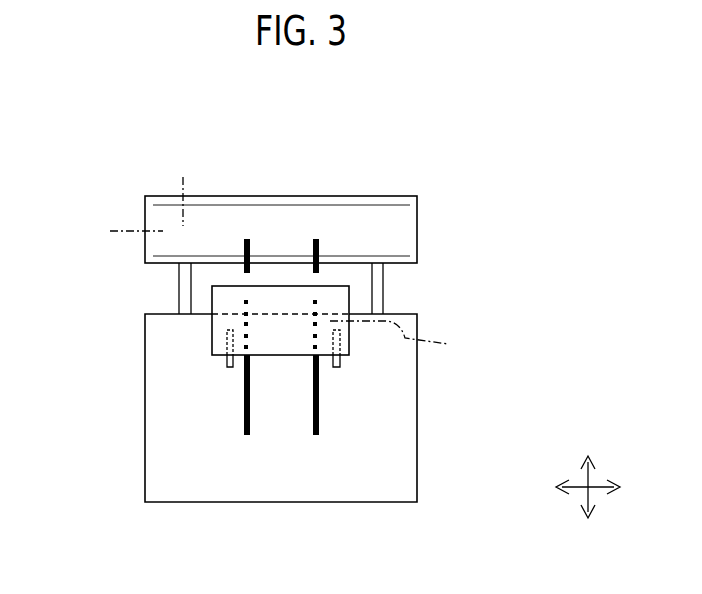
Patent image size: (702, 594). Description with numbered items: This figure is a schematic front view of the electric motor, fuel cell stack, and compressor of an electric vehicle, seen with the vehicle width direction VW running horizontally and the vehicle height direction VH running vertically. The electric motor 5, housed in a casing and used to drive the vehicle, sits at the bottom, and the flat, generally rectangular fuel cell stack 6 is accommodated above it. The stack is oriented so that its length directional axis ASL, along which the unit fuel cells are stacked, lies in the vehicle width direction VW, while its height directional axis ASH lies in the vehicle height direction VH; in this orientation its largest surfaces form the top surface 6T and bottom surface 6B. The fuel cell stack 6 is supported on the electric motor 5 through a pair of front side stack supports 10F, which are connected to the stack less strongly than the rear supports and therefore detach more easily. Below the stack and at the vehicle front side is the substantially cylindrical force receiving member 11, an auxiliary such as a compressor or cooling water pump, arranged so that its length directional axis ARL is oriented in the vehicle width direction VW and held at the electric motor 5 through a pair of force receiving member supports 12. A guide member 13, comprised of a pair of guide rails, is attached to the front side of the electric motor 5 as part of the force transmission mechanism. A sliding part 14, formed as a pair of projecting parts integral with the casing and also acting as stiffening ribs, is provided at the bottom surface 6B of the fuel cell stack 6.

The electric motor 5 is at (402, 503).
The fuel cell stack 6 is at (402, 196).
The top surface 6T is at (358, 195).
The bottom surface 6B is at (406, 265).
The front side stack supports 10F is at (179, 281).
The force receiving member 11 is at (222, 331).
The force receiving member supports 12 is at (227, 366).
The guide member 13 is at (312, 420).
The sliding part 14 is at (313, 245).
The height directional axis ASH is at (187, 189).
The length directional axis ASL is at (120, 231).
The length directional axis of the force receiving member ARL is at (400, 349).
The vehicle height direction VH is at (589, 470).
The vehicle width direction VW is at (604, 489).